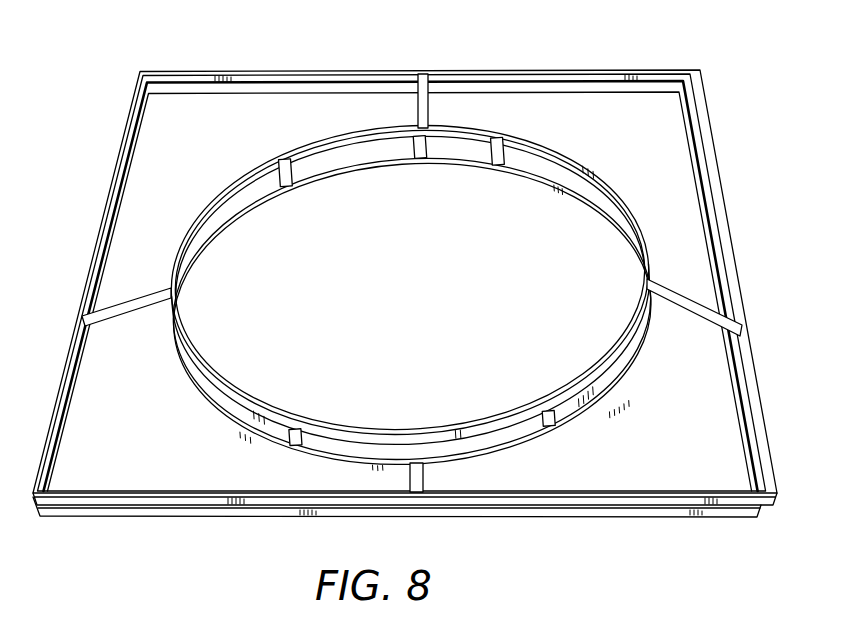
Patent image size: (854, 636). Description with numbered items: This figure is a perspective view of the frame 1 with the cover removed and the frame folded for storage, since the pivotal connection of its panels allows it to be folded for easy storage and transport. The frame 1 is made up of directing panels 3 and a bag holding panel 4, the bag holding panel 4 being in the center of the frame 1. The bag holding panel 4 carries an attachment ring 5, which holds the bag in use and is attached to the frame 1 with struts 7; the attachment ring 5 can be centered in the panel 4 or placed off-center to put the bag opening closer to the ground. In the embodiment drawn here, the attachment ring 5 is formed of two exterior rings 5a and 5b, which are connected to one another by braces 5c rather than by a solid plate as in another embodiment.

The frame 1 is at (407, 280).
The directing panels 3 is at (648, 508).
The bag holding panel 4 is at (630, 491).
The attachment ring 5 is at (422, 301).
The exterior ring 5a is at (413, 428).
The exterior ring 5b is at (600, 405).
The braces 5c is at (500, 160).
The struts 7 is at (428, 100).